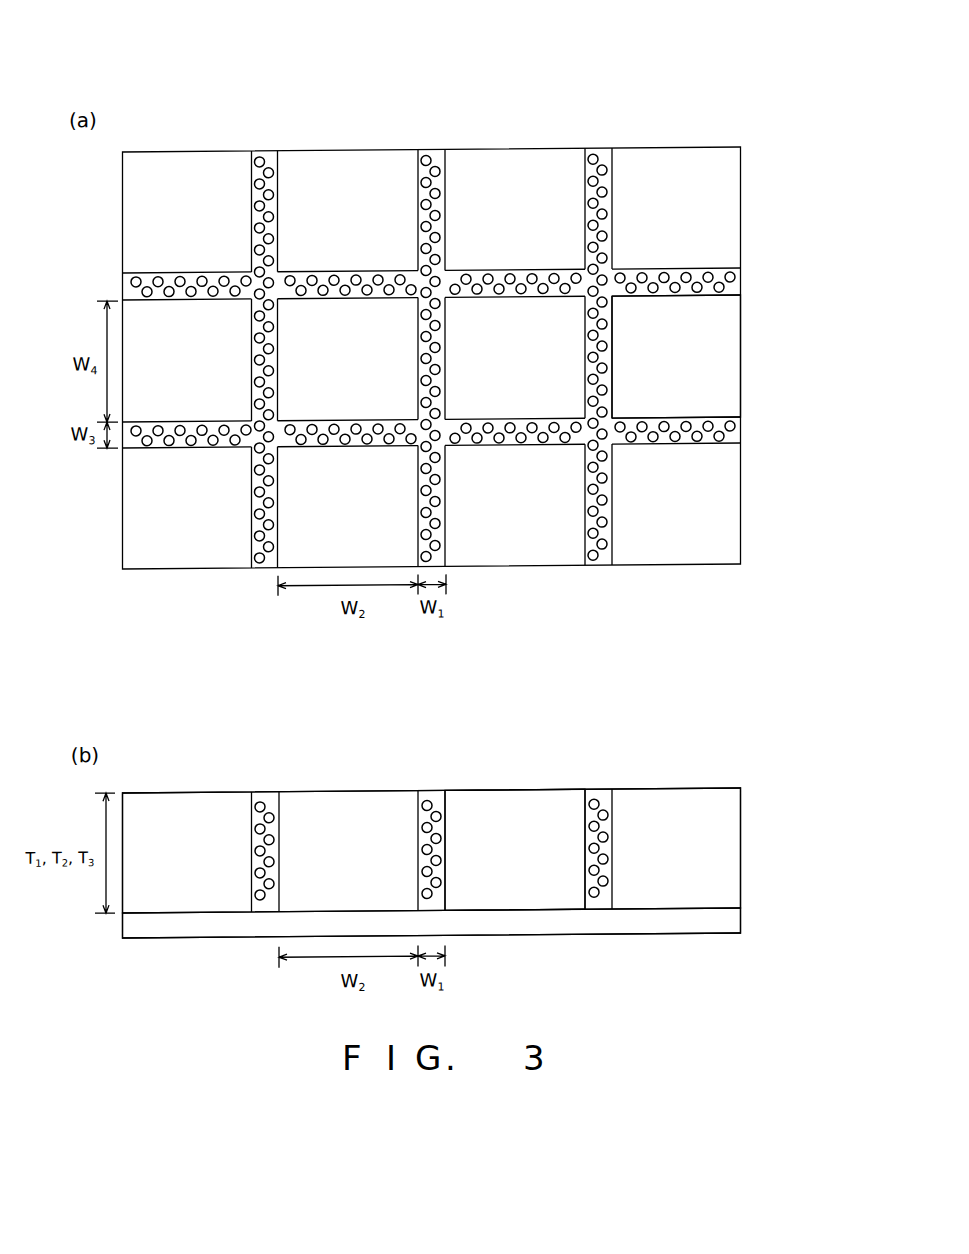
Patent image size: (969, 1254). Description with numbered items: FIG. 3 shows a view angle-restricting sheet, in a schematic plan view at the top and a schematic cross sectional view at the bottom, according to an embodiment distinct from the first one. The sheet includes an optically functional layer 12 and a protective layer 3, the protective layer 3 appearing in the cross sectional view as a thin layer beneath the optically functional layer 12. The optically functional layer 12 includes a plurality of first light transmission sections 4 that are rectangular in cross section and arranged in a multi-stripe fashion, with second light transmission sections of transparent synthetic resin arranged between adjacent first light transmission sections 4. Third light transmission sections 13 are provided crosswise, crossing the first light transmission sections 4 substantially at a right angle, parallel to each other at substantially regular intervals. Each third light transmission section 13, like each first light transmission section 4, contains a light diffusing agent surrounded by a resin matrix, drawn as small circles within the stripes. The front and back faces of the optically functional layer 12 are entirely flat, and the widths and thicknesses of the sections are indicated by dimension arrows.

The protective layer 3 is at (733, 925).
The first light transmission section 4 is at (597, 779).
The optically functional layer 12 is at (764, 846).
The third light transmission section 13 is at (759, 431).